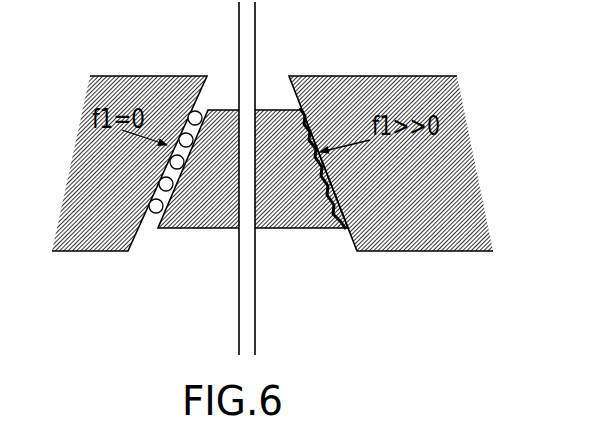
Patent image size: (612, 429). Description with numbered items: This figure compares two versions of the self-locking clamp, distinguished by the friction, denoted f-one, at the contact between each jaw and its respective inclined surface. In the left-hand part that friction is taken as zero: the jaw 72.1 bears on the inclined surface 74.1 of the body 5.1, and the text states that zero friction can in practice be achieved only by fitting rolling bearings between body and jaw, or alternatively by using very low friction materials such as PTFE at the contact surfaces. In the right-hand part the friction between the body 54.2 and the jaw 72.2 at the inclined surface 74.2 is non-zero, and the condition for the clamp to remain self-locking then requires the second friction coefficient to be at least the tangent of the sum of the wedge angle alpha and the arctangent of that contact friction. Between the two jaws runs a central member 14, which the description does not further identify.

The rod / shaft 14 is at (256, 30).
The body 5.1 is at (95, 233).
The body 54.2 is at (428, 233).
The jaw 72.1 is at (197, 230).
The jaw 72.2 is at (297, 213).
The inclined surface 74.1 is at (182, 125).
The inclined surface 74.2 is at (308, 118).